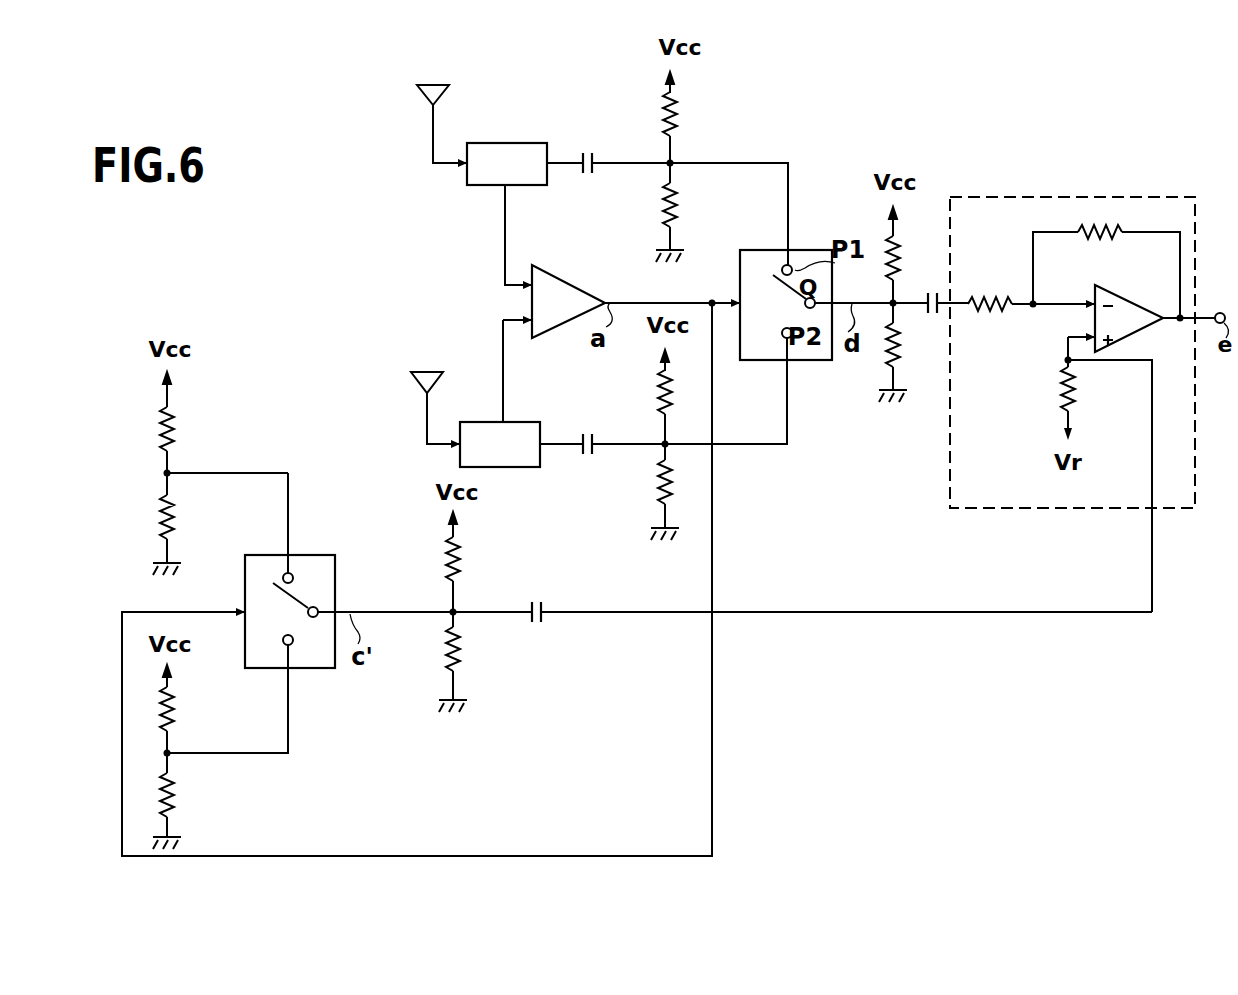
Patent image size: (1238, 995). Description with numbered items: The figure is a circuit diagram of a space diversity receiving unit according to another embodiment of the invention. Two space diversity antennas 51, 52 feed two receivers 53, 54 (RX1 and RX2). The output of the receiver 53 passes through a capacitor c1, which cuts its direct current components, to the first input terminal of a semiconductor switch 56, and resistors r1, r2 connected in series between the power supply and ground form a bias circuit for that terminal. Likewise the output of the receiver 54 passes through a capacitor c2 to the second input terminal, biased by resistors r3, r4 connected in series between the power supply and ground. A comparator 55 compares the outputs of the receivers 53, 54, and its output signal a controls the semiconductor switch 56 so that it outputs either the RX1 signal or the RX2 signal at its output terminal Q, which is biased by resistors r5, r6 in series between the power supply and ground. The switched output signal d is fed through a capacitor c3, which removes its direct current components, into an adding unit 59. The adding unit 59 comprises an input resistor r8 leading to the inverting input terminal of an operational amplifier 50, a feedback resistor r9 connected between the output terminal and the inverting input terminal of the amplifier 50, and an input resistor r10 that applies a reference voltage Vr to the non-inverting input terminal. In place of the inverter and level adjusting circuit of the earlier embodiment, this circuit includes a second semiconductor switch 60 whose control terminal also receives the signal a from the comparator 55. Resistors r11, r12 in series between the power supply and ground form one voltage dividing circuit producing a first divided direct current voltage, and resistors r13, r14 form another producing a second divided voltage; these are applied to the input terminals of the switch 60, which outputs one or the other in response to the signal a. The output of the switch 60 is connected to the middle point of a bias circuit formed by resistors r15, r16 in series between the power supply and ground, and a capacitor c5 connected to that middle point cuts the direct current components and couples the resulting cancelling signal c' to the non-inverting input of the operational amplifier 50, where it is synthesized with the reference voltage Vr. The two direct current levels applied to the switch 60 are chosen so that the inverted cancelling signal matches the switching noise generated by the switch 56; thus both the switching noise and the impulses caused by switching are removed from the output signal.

The operational amplifier 50 is at (1105, 285).
The space diversity antenna 51 is at (436, 90).
The space diversity antenna 52 is at (432, 372).
The receiver (RX1) 53 is at (512, 143).
The receiver (RX2) 54 is at (522, 422).
The comparator 55 is at (540, 272).
The semiconductor switch 56 is at (812, 250).
The adding unit 59 is at (1170, 512).
The semiconductor switch 60 is at (312, 555).
The resistor r1 is at (677, 114).
The resistor r2 is at (680, 206).
The resistor r3 is at (675, 400).
The resistor r4 is at (658, 494).
The resistor r5 is at (900, 268).
The resistor r6 is at (900, 352).
The input resistor r8 is at (990, 298).
The feedback resistor r9 is at (1124, 232).
The input resistor r10 is at (1072, 396).
The resistor r11 is at (174, 428).
The resistor r12 is at (174, 516).
The resistor r13 is at (174, 706).
The resistor r14 is at (174, 800).
The resistor r15 is at (458, 566).
The resistor r16 is at (462, 664).
The capacitor c1 is at (590, 153).
The capacitor c2 is at (587, 434).
The capacitor c3 is at (936, 313).
The capacitor c5 is at (534, 602).